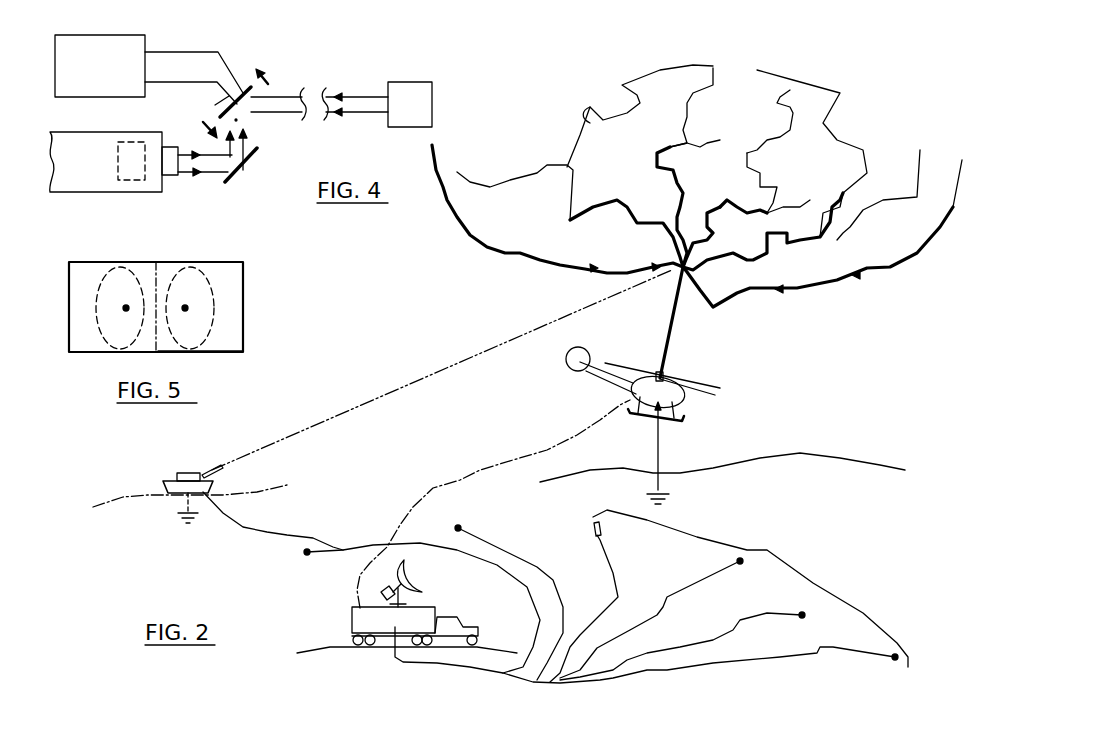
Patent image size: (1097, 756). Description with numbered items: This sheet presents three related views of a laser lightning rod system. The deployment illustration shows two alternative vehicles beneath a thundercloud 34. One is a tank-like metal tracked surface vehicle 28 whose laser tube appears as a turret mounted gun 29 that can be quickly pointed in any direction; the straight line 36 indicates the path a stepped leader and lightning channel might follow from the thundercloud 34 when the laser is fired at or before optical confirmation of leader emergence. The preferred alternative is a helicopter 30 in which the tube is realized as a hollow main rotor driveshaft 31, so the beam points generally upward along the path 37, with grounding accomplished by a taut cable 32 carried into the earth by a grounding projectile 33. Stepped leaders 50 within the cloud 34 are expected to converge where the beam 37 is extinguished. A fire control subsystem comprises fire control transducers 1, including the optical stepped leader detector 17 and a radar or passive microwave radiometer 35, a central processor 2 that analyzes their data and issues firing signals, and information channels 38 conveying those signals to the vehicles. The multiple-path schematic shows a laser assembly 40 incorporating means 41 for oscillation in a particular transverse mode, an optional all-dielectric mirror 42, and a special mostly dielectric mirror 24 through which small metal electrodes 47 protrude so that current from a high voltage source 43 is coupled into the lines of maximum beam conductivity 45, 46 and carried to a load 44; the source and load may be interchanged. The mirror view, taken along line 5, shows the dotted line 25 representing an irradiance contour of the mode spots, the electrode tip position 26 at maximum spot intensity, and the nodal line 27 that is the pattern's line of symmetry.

In FIG. 2, the fire control transducers 1 is at (782, 540).
In FIG. 2, the central processor 2 is at (300, 606).
In FIG. 4, the line 5— 5 is at (266, 80).
In FIG. 2, the optical stepped leader detector 17 is at (594, 528).
In FIG. 4, the special mirror 24 is at (243, 88).
In FIG. 5, the special mirror 24 is at (250, 258).
In FIG. 5, the dotted line 25 is at (214, 302).
In FIG. 5, the electrode tip position 26 is at (188, 308).
In FIG. 5, the nodal line 27 is at (160, 350).
In FIG. 2, the surface vehicle 28 is at (177, 475).
In FIG. 2, the turret mounted gun 29 is at (210, 472).
In FIG. 2, the helicopter 30 is at (690, 411).
In FIG. 2, the hollow main rotor driveshaft 31 is at (700, 388).
In FIG. 2, the grounding cable 32 is at (662, 453).
In FIG. 2, the grounding projectile 33 is at (667, 494).
In FIG. 2, the thundercloud 34 is at (512, 221).
In FIG. 2, the passive microwave radiometer / radar 35 is at (396, 584).
In FIG. 2, the straight line 36 is at (452, 373).
In FIG. 2, the path 37 is at (672, 332).
In FIG. 2, the information channels 38 is at (257, 527).
In FIG. 4, the laser assembly 40 is at (100, 192).
In FIG. 4, the transverse mode means 41 is at (132, 176).
In FIG. 4, the mirror 42 is at (248, 180).
In FIG. 4, the high voltage source 43 is at (98, 35).
In FIG. 4, the load 44 is at (410, 82).
In FIG. 4, the line of maximum beam conductivity 45 is at (190, 153).
In FIG. 4, the line of maximum beam conductivity 46 is at (204, 173).
In FIG. 4, the metal electrodes 47 is at (229, 96).
In FIG. 2, the stepped leaders 50 is at (697, 184).